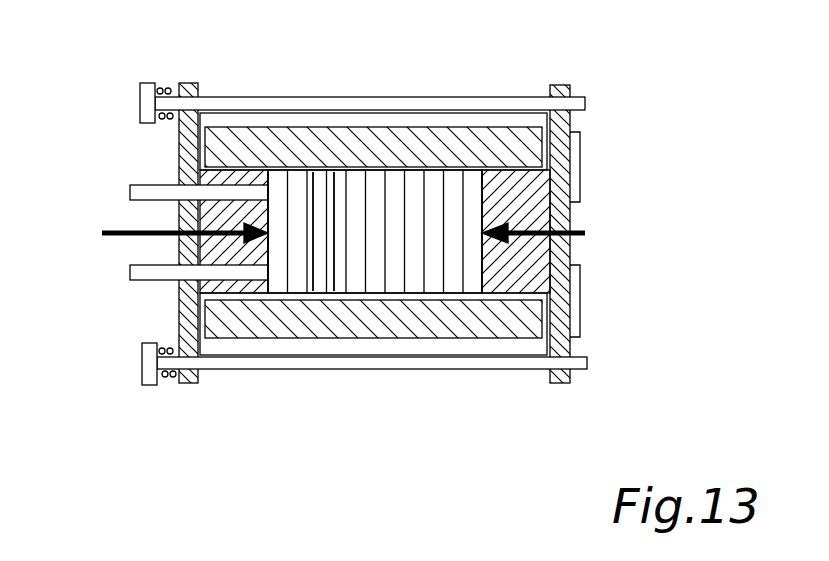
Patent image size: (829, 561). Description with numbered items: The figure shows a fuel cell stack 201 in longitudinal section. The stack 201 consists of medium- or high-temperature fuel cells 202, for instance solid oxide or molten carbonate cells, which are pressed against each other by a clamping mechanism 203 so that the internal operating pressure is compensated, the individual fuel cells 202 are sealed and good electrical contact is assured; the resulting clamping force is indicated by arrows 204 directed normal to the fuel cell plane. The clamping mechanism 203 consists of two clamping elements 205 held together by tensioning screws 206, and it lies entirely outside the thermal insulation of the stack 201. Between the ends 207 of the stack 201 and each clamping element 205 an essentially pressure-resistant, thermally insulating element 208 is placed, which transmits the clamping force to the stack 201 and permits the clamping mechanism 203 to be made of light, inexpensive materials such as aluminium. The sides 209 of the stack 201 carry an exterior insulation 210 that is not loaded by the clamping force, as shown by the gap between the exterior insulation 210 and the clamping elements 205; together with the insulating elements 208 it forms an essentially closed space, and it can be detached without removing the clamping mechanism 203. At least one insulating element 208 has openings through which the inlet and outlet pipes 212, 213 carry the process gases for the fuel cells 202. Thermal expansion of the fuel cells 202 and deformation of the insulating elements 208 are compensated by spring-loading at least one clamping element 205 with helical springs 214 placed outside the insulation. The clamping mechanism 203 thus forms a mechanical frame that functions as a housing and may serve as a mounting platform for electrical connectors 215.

The fuel cell stack 201 is at (374, 173).
The fuel cells 202 is at (313, 285).
The clamping mechanism 203 is at (490, 95).
The arrows 204 is at (118, 238).
The clamping elements 205 is at (180, 162).
The tensioning screws 206 is at (225, 97).
The ends of the stack 207 is at (268, 200).
The thermally insulating element 208 is at (207, 219).
The sides of the fuel cell stack 209 is at (407, 172).
The exterior insulation 210 is at (353, 142).
The inlet pipe 212 is at (138, 185).
The outlet pipe 213 is at (137, 282).
The helical springs 214 is at (160, 88).
The electrical connectors 215 is at (580, 152).